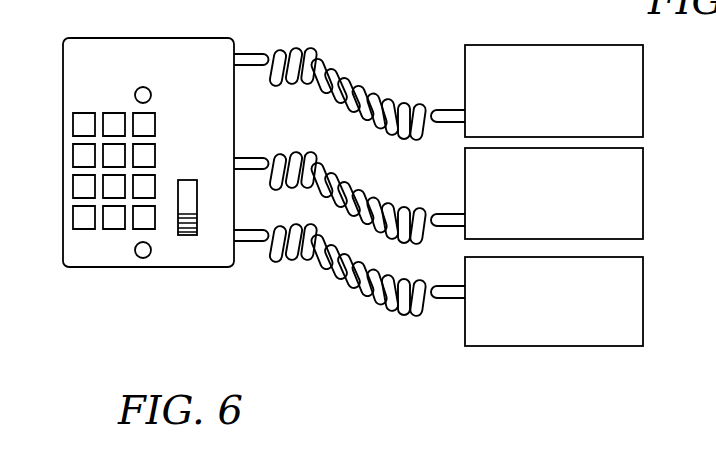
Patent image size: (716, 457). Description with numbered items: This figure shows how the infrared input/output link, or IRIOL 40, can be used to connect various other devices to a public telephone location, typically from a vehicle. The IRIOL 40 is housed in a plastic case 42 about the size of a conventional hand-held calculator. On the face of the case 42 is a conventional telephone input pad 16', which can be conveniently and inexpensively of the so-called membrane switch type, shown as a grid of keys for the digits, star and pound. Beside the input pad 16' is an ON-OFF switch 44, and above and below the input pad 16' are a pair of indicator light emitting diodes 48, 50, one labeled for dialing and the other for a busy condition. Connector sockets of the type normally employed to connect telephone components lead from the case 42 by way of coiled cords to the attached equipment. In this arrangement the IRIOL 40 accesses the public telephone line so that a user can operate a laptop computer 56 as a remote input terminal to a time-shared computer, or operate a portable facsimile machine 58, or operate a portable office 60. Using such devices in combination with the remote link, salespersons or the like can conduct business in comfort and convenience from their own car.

The IR input/output link 40 is at (252, 31).
The plastic case 42 is at (235, 133).
The ON-OFF switch 44 is at (197, 226).
The indicator light emitting diode 48 is at (150, 89).
The indicator light emitting diode 50 is at (147, 257).
The telephone input pad 16' is at (145, 171).
The laptop computer 56 is at (628, 323).
The portable facsimile machine 58 is at (628, 224).
The portable office 60 is at (628, 111).